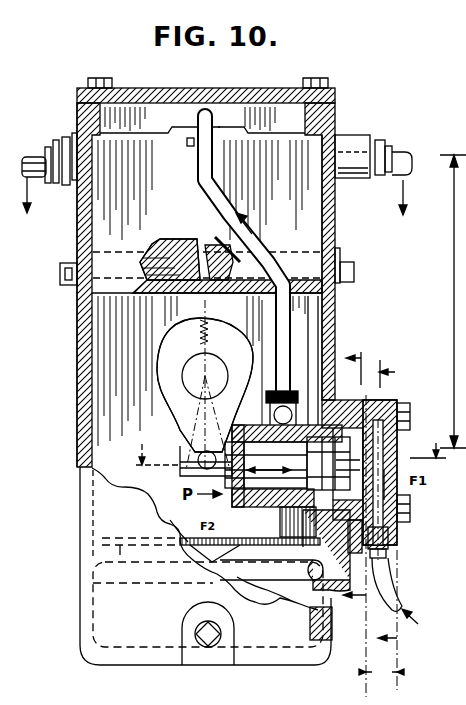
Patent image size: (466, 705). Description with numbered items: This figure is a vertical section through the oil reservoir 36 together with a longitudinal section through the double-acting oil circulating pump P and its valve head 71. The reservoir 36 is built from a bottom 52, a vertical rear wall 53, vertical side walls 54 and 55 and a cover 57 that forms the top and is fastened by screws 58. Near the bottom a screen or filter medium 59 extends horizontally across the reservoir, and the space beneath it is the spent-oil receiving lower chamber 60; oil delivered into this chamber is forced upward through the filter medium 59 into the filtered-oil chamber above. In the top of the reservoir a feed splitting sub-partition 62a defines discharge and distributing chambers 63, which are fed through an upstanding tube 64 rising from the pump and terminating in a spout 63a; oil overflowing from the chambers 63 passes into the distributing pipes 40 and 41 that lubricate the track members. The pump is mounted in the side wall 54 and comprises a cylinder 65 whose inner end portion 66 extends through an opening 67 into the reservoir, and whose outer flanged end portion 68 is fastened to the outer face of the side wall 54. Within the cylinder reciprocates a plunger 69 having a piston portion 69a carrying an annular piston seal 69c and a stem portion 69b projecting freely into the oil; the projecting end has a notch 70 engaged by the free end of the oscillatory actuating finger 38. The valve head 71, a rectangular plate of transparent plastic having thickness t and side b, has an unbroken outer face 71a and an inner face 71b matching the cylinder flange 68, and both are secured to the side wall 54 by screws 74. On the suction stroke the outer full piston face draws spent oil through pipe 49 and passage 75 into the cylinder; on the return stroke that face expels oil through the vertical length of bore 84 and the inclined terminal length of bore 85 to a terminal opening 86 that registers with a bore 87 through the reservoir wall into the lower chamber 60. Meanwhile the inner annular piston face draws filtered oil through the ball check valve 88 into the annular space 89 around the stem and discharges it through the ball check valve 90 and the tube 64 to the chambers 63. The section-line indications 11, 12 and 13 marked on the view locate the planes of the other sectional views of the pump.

The dimension line 11 is at (353, 518).
The dimension line 12 is at (391, 521).
The dimension line 13 is at (282, 453).
The reservoir 36 is at (340, 228).
The oscillatory actuating finger 38 is at (165, 382).
The distributing pipe 40 is at (397, 178).
The distributing pipe 41 is at (49, 173).
The pipe 49 is at (388, 582).
The bottom 52 is at (332, 621).
The vertical rear wall 53 is at (103, 604).
The vertical side wall 54 is at (336, 320).
The vertical side wall 55 is at (82, 376).
The cover 57 is at (195, 88).
The screws 58 is at (97, 77).
The filter medium 59 is at (203, 562).
The spent-oil receiving lower chamber 60 is at (222, 570).
The feed splitting sub-partition 62a is at (140, 262).
The discharge and distributing chamber 63 is at (188, 260).
The spout 63a is at (196, 130).
The upstanding tube 64 is at (207, 190).
The cylinder 65 is at (316, 397).
The inner end portion 66 is at (250, 495).
The opening 67 is at (344, 445).
The outer flanged end portion 68 is at (366, 402).
The plunger member 69 is at (162, 510).
The piston portion 69a is at (262, 390).
The stem portion 69b is at (182, 476).
The annular piston seal 69c is at (400, 480).
The notch 70 is at (180, 448).
The valve head 71 is at (394, 406).
The outer face 71a is at (390, 550).
The inner face 71b is at (382, 402).
The screws 74 is at (410, 420).
The passage 75 is at (453, 301).
The vertical length of bore 84 is at (404, 496).
The terminal length of bore 85 is at (396, 530).
The terminal opening 86 is at (352, 556).
The bore 87 is at (318, 574).
The ball check valve 88 is at (292, 505).
The annular space 89 is at (296, 400).
The ball check valve 90 is at (246, 362).